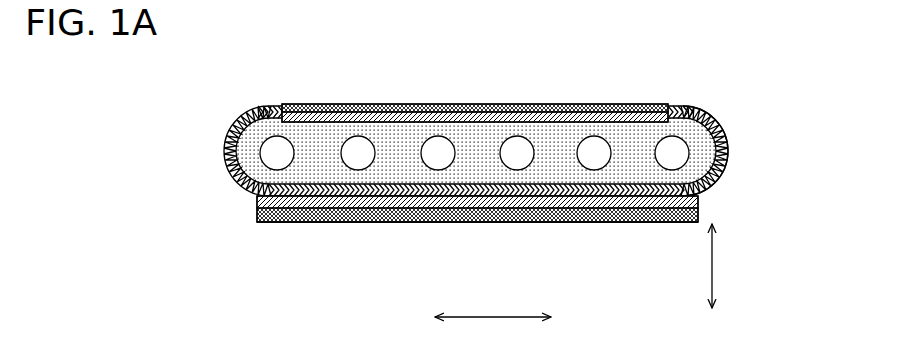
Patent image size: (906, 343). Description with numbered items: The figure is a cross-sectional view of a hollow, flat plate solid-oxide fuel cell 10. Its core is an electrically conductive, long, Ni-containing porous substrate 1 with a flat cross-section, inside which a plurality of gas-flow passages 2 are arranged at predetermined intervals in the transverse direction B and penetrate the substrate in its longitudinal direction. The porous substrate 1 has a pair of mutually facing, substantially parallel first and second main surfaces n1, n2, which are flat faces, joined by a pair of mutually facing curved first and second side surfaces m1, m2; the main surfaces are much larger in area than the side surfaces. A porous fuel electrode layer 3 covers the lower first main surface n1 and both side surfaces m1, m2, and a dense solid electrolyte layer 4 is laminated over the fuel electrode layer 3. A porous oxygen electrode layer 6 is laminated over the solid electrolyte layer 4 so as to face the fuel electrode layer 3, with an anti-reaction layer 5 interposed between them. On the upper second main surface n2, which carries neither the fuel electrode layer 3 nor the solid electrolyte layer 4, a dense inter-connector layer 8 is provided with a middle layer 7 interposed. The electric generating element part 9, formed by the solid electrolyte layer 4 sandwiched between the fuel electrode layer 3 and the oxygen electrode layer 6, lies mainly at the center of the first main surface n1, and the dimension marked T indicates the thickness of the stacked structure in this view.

The porous substrate 1 is at (393, 167).
The gas-flow passages 2 is at (428, 150).
The fuel electrode layer 3 is at (700, 192).
The solid electrolyte layer 4 is at (620, 197).
The anti-reaction layer 5 is at (555, 198).
The oxygen electrode layer 6 is at (595, 212).
The middle layer 7 is at (632, 122).
The inter-connector layer 8 is at (435, 105).
The electric generating element part 9 is at (478, 225).
The solid-oxide fuel cell 10 is at (696, 102).
The first main surface n1 is at (457, 191).
The second main surface n2 is at (557, 120).
The first side surface m1 is at (226, 152).
The second side surface m2 is at (728, 156).
The thickness T is at (726, 266).
The transverse direction B is at (493, 330).